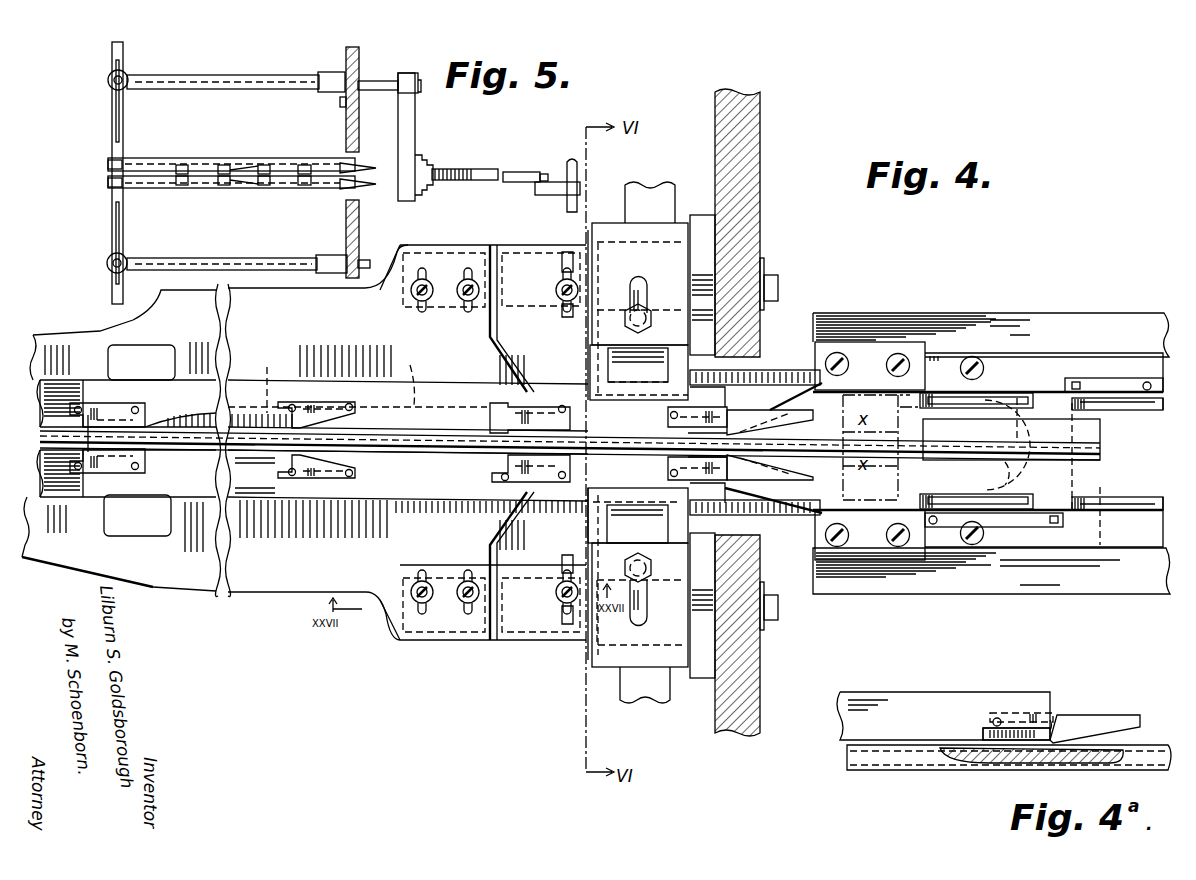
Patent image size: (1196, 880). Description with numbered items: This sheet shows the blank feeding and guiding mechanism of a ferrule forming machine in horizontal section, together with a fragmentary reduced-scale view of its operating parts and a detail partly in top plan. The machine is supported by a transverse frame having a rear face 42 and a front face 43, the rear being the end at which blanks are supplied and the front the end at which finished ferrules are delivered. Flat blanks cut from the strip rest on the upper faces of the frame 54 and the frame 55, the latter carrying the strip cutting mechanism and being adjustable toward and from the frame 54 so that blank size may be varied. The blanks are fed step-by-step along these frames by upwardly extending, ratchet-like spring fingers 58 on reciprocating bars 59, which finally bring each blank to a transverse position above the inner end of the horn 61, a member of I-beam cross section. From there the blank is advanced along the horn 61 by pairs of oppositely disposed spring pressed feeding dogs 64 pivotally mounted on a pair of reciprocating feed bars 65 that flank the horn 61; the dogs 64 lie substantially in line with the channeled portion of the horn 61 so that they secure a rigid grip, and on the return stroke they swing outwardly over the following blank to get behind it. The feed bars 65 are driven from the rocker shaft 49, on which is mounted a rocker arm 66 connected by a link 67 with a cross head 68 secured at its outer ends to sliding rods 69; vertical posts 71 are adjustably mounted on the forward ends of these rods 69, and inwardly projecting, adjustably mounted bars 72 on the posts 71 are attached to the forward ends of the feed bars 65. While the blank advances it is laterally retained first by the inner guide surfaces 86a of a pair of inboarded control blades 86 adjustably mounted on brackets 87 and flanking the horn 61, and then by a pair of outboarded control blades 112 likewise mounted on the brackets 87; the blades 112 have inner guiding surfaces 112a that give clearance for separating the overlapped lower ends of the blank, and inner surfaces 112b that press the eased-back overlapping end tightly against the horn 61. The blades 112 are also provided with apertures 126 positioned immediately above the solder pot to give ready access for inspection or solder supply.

In FIG. 5, the rear face 42 is at (360, 64).
In FIG. 4, the rear face 42 is at (762, 198).
In FIG. 4, the front face 43 is at (762, 694).
In FIG. 5, the rocker shaft 49 is at (566, 167).
In FIG. 4, the frame 54 is at (991, 552).
In FIG. 4, the frame 55 is at (991, 352).
In FIG. 4, the spring fingers 58 is at (948, 400).
In FIG. 4, the reciprocating bars 59 is at (1158, 411).
In FIG. 4, the horn 61 is at (100, 438).
In FIG. 4A, the horn 61 is at (912, 771).
In FIG. 5, the feeding dogs 64 is at (186, 166).
In FIG. 4, the feeding dogs 64 is at (128, 405).
In FIG. 4A, the feeding dogs 64 is at (1100, 722).
In FIG. 5, the feed bars 65 is at (155, 160).
In FIG. 4, the feed bars 65 is at (78, 380).
In FIG. 4A, the feed bars 65 is at (945, 716).
In FIG. 5, the rocker arm 66 is at (556, 195).
In FIG. 5, the link 67 is at (484, 170).
In FIG. 5, the cross head 68 is at (413, 123).
In FIG. 5, the sliding rods 69 is at (257, 76).
In FIG. 5, the vertical posts 71 is at (108, 80).
In FIG. 5, the bars 72 is at (113, 121).
In FIG. 4, the inboarded control blades 86 is at (770, 528).
In FIG. 4, the inner guide surfaces 86a is at (762, 376).
In FIG. 4, the brackets 87 is at (522, 268).
In FIG. 4, the outboarded control blades 112 is at (302, 442).
In FIG. 4, the inner guiding surfaces 112a is at (400, 371).
In FIG. 4, the inner surfaces 112b is at (260, 375).
In FIG. 4, the apertures 126 is at (139, 440).